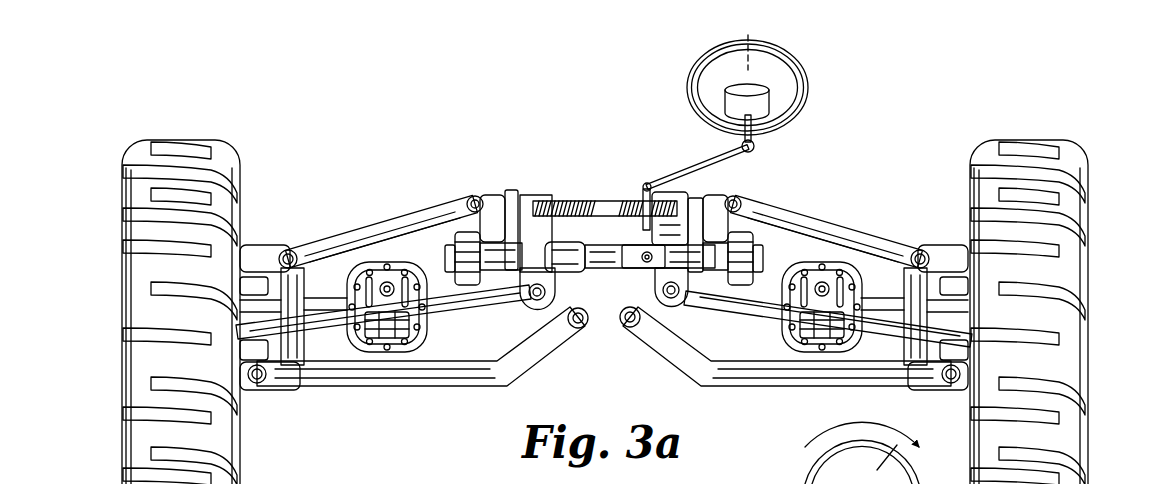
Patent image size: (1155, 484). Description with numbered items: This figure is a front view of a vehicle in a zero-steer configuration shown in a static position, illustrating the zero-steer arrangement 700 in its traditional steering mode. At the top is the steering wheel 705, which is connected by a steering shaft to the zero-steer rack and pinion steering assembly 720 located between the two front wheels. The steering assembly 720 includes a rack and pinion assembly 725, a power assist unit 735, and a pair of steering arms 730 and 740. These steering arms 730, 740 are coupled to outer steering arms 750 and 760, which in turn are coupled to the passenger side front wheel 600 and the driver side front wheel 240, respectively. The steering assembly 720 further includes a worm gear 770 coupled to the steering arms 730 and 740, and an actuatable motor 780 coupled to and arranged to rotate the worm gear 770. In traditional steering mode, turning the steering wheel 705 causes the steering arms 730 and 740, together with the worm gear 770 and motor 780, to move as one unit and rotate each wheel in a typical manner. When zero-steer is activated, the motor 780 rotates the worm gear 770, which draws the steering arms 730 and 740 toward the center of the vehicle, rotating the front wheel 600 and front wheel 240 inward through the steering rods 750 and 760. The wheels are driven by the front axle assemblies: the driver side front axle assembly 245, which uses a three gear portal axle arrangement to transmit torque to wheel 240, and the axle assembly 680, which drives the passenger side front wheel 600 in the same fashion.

The zero-steer arrangement 700 is at (882, 110).
The steering wheel 705 is at (810, 92).
The zero-steer rack and pinion steering assembly 720 is at (600, 197).
The rack and pinion assembly 725 is at (646, 263).
The steering arm 730 is at (512, 190).
The power assist unit 735 is at (568, 300).
The steering arm 740 is at (676, 192).
The steering arm 750 is at (478, 308).
The steering arm 760 is at (732, 312).
The worm gear 770 is at (563, 195).
The actuatable motor 780 is at (490, 197).
The driver side front axle assembly 680 is at (386, 261).
The front driver side axle assembly 245 is at (822, 259).
The passenger side front wheel 600 is at (243, 421).
The driver side front wheel 240 is at (965, 445).